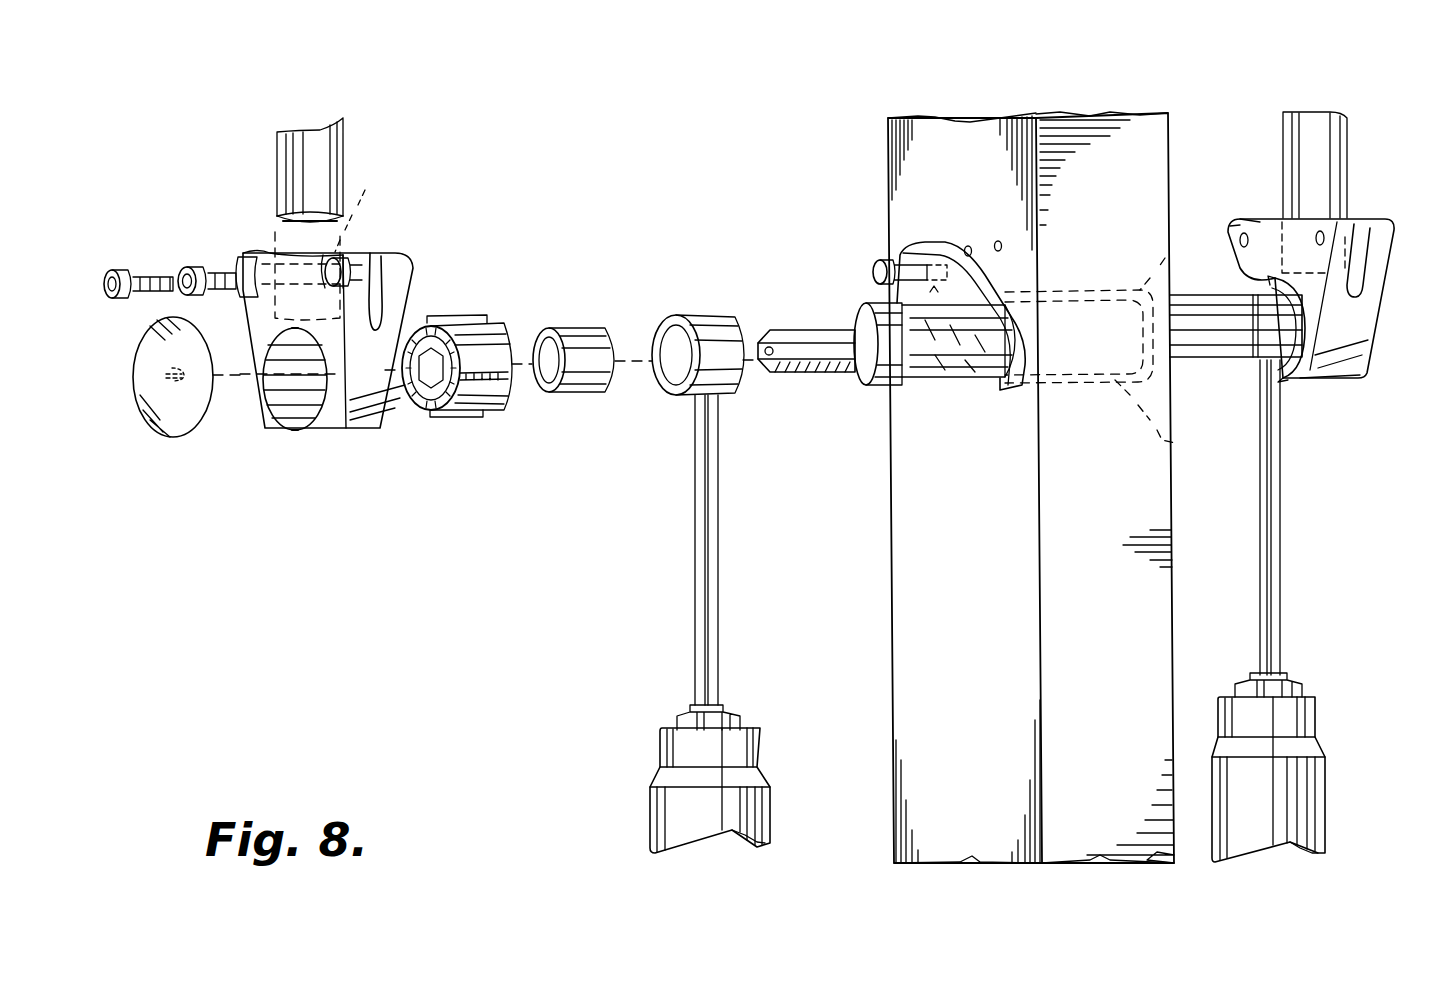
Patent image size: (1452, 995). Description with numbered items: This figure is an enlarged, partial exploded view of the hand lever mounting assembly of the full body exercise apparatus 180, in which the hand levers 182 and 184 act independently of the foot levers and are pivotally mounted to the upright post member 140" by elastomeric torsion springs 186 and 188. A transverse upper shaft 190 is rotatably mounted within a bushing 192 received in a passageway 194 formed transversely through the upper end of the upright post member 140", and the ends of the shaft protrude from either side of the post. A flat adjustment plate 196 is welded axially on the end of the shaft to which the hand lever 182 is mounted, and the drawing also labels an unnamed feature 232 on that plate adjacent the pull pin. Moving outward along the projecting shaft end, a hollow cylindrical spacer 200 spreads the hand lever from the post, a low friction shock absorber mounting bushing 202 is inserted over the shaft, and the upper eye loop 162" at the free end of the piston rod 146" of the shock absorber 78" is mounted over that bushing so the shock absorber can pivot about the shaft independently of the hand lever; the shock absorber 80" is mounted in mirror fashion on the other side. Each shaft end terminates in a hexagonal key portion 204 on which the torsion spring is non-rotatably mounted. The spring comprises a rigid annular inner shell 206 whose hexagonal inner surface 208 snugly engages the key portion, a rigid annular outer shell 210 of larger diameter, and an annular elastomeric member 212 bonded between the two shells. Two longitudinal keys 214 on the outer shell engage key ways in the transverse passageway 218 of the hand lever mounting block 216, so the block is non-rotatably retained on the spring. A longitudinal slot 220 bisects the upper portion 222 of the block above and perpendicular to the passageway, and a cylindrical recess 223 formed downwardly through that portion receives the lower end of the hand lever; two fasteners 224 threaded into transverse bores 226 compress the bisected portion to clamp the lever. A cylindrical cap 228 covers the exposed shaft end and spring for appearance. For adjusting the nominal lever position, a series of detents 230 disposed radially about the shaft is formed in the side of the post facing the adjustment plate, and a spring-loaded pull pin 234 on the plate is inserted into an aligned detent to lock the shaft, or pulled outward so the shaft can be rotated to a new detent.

The shock absorber 78 is at (657, 803).
The shock absorber 80 is at (1313, 785).
The upright post member 140 is at (1145, 128).
The piston rod 146 is at (693, 572).
The upper eye loop 162 is at (703, 318).
The full body exercise apparatus 180 is at (1052, 77).
The hand lever 182 is at (345, 150).
The hand lever 184 is at (1345, 147).
The elastomeric torsion spring 186 is at (498, 318).
The elastomeric torsion spring 188 is at (1272, 218).
The transverse upper shaft 190 is at (865, 387).
The bushing 192 is at (1119, 366).
The passageway 194 is at (1168, 258).
The adjustment plate 196 is at (925, 248).
The spacer 200 is at (917, 380).
The shock absorber mounting bushing 202 is at (578, 330).
The hexagonal key portion 204 is at (803, 372).
The inner shell 206 is at (410, 395).
The inner surface 208 is at (445, 410).
The outer shell 210 is at (495, 395).
The annular elastomeric member 212 is at (410, 332).
The longitudinal keys 214 is at (440, 318).
The hand lever mounting block 216 is at (368, 422).
The transverse passageway 218 is at (266, 415).
The longitudinal slot 220 is at (395, 250).
The upper portion 222 is at (438, 256).
The cylindrical recess 223 is at (373, 208).
The fasteners 224 is at (125, 268).
The transverse bores 226 is at (250, 262).
The cylindrical cap 228 is at (157, 425).
The detents 230 is at (998, 243).
The screw hole 232 is at (920, 258).
The pull pin 234 is at (873, 278).